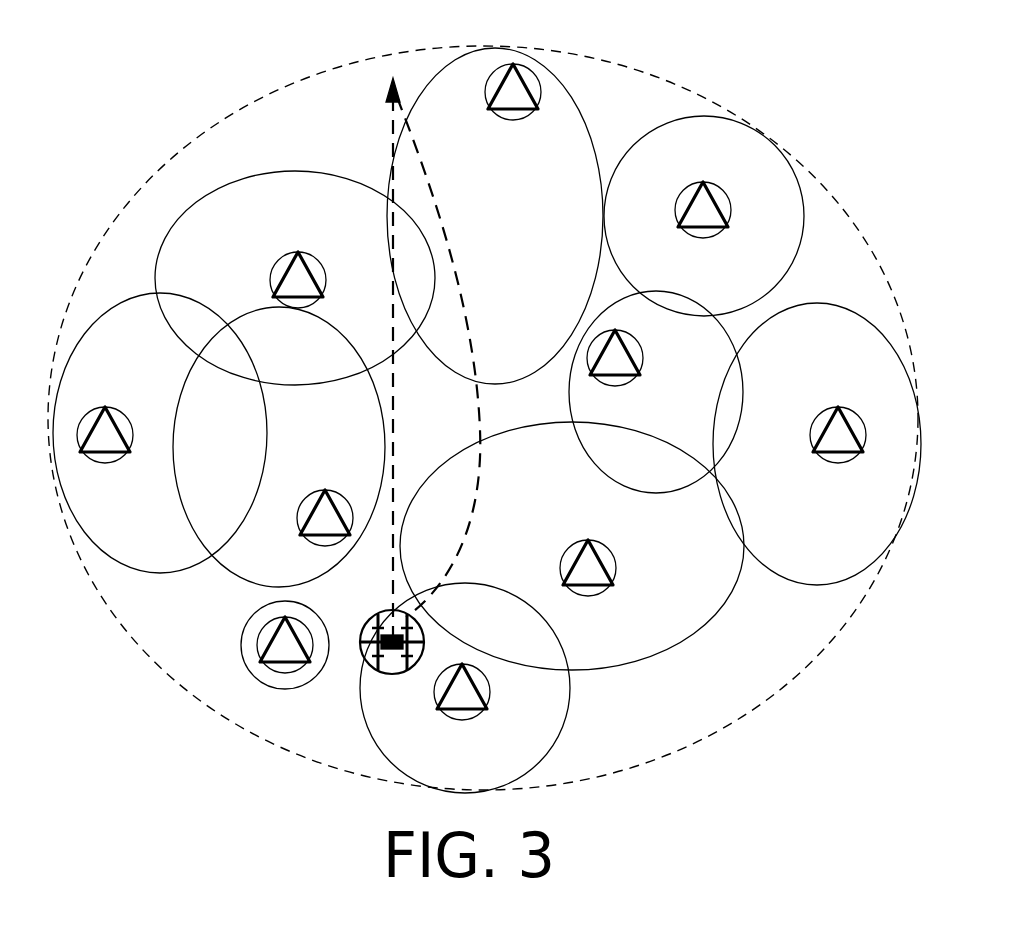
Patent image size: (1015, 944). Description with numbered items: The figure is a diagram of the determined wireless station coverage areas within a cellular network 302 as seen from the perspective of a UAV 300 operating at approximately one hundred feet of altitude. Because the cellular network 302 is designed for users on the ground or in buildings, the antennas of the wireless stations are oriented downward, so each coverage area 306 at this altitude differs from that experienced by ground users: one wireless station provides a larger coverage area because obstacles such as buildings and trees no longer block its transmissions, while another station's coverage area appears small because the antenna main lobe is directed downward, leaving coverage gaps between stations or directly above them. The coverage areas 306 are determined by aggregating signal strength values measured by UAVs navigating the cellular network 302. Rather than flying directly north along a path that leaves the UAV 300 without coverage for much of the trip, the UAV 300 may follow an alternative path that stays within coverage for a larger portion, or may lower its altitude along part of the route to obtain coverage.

The UAV 300 is at (397, 672).
The cellular network 302 is at (850, 213).
The coverage area 306 is at (703, 117).